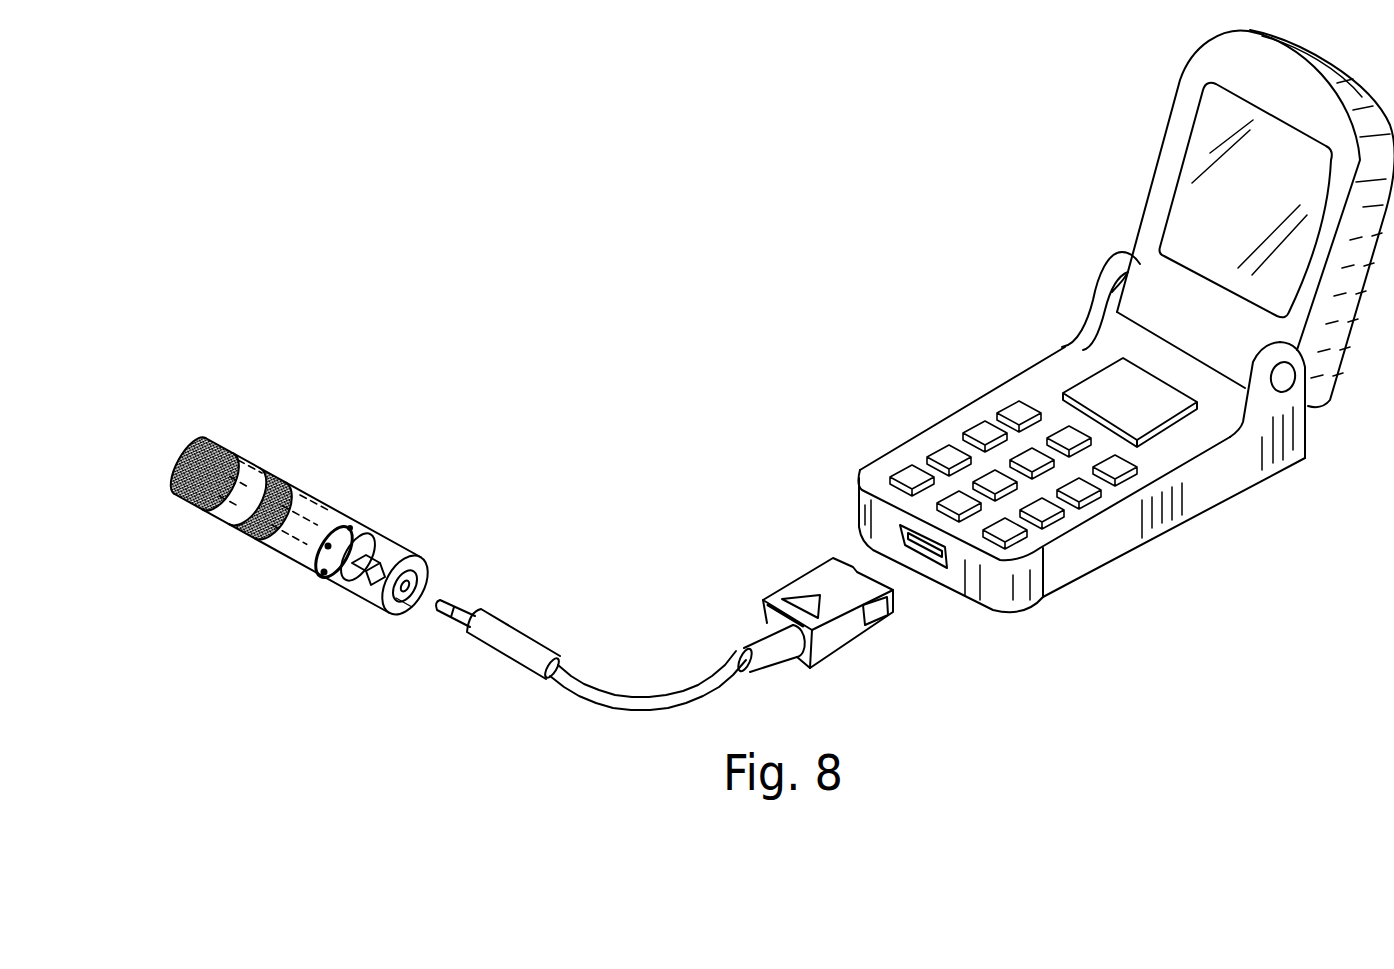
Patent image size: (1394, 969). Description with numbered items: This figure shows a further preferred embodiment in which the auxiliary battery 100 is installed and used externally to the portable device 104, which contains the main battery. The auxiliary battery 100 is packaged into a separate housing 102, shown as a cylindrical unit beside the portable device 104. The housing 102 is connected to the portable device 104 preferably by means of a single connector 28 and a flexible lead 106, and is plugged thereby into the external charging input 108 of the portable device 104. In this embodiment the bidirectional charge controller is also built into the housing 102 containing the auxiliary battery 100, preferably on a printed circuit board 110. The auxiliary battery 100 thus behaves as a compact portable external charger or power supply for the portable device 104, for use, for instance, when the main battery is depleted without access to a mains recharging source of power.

The auxiliary battery 100 is at (321, 477).
The housing 102 is at (272, 447).
The printed circuit board 110 is at (370, 533).
The connector 28 is at (427, 583).
The portable device 104 is at (992, 370).
The flexible lead 106 is at (628, 710).
The external charging input 108 is at (927, 560).